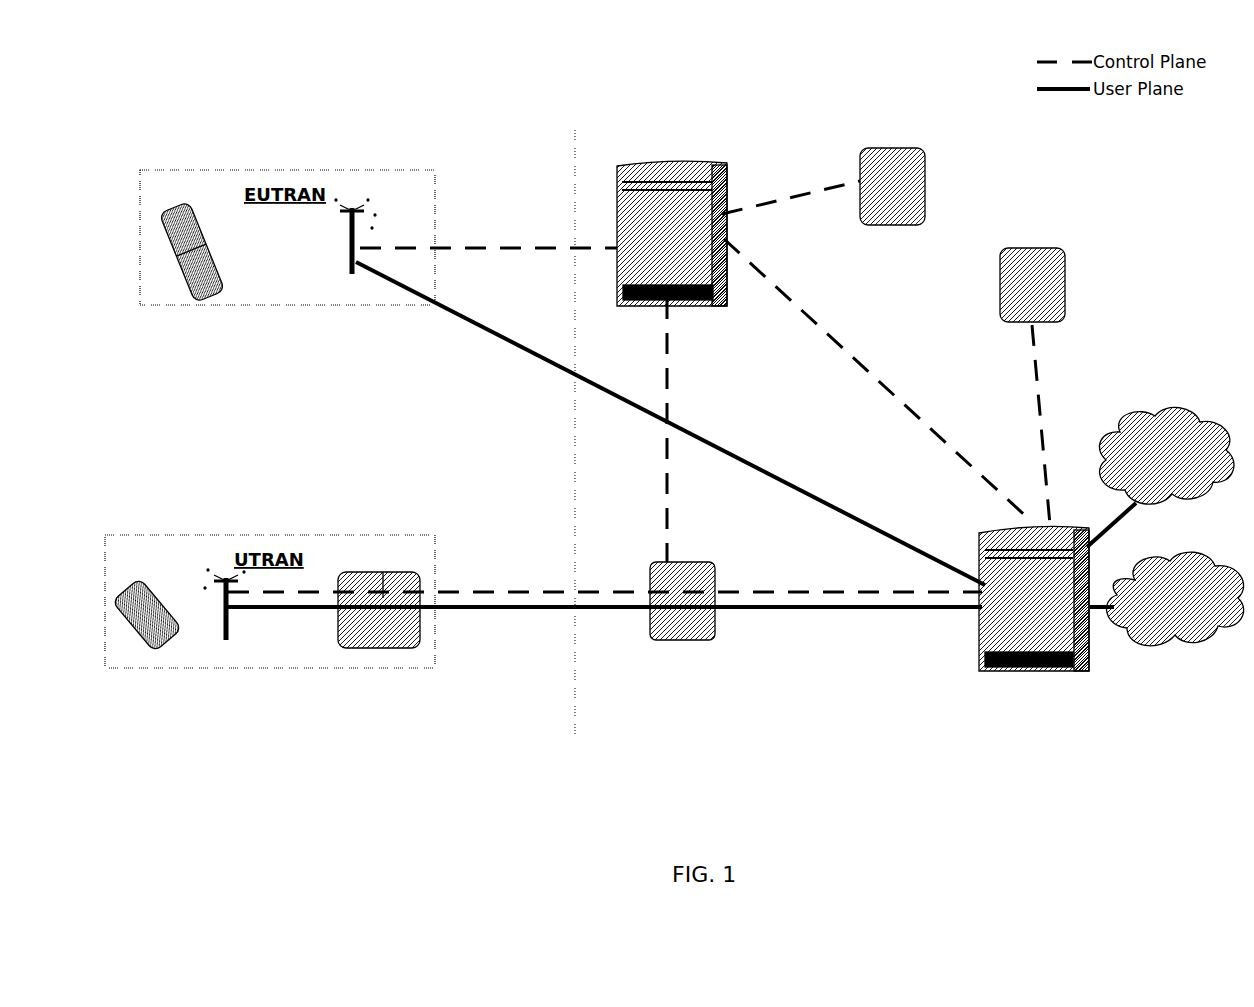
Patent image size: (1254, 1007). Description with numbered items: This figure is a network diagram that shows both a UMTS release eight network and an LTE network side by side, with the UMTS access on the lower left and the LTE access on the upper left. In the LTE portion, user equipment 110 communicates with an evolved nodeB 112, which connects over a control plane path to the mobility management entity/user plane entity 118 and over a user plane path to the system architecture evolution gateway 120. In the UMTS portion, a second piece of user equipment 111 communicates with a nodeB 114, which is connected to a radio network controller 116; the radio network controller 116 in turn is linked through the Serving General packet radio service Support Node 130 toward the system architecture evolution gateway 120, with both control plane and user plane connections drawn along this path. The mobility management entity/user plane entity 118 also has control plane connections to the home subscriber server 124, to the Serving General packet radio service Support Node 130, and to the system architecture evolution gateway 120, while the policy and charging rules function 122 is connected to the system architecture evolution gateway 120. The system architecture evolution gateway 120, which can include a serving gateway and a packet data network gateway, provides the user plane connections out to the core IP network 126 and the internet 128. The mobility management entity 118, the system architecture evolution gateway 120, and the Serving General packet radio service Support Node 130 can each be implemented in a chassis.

The user equipment 110 is at (188, 205).
The user equipment (UTRAN) 111 is at (170, 642).
The evolved nodeB 112 is at (350, 273).
The nodeB 114 is at (229, 615).
The radio network controller 116 is at (383, 642).
The mobility management entity/user plane entity 118 is at (678, 158).
The system architecture evolution gateway 120 is at (1080, 660).
The policy and charging rules function 122 is at (1066, 292).
The home subscriber server 124 is at (897, 226).
The core IP network 126 is at (1140, 413).
The internet 128 is at (1196, 553).
The Serving General packet radio service Support Node 130 is at (715, 615).